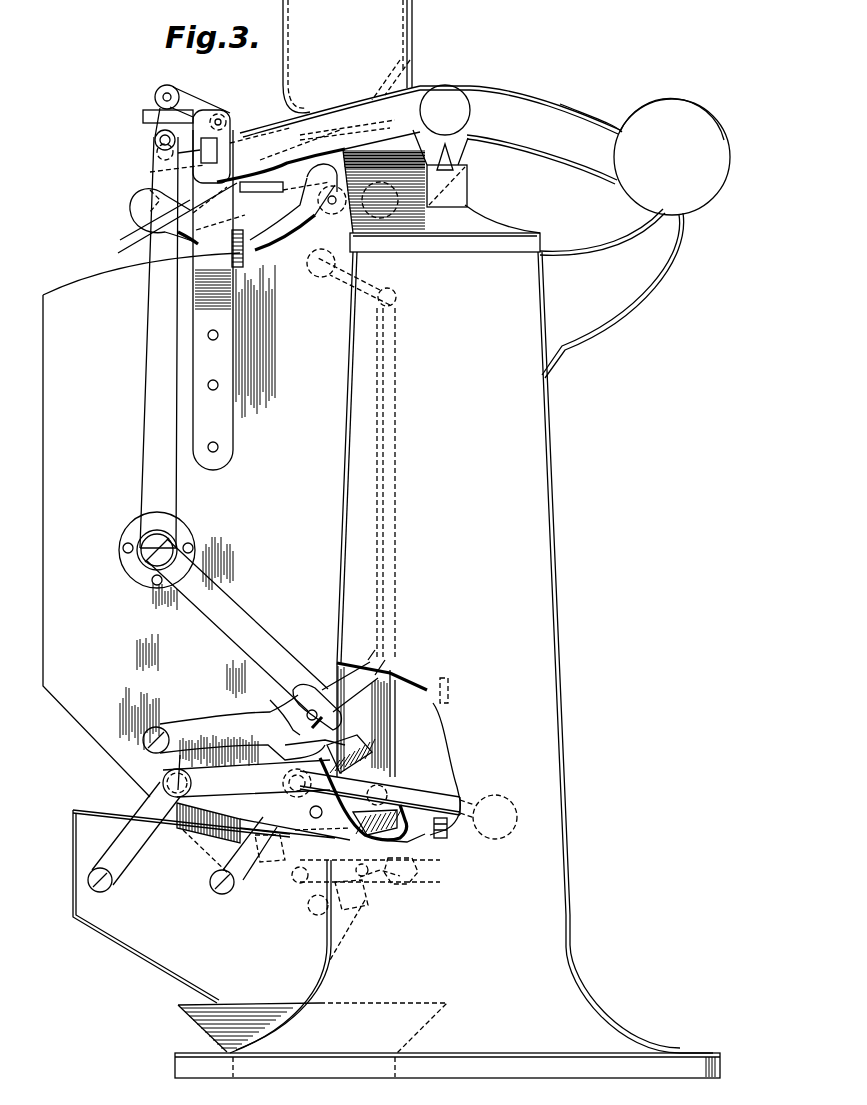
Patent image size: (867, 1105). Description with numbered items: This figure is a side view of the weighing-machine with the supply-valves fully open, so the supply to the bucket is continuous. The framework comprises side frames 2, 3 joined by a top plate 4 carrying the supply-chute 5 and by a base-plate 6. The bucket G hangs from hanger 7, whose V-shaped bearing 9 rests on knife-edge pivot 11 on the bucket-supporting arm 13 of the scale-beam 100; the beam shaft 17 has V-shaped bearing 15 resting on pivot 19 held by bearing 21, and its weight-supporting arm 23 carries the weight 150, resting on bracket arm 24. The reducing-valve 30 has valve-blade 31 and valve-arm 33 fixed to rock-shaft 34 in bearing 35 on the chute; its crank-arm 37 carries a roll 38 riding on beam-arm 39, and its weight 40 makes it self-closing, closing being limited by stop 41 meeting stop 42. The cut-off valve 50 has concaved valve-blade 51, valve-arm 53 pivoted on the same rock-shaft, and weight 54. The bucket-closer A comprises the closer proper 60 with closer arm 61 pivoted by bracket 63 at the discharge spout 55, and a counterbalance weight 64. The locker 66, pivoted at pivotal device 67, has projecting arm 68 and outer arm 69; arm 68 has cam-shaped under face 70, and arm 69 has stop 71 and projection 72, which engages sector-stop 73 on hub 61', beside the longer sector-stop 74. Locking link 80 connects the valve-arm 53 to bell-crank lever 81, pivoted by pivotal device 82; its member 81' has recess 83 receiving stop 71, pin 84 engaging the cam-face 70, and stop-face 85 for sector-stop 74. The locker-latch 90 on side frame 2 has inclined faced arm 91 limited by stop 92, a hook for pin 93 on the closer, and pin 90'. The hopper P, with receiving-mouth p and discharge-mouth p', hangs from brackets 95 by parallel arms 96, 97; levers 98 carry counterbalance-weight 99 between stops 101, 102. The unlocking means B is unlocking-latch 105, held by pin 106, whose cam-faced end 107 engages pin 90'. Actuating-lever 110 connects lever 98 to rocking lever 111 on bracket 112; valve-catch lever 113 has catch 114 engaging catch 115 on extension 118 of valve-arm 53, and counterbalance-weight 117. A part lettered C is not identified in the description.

The side frame 2 is at (440, 732).
The side frame 3 is at (545, 582).
The top plate 4 is at (490, 228).
The supply-chute 5 is at (414, 24).
The base-plate 6 is at (470, 1060).
The hanger 7 is at (200, 272).
The V-shaped bearing 9 is at (155, 138).
The pivot 11 is at (157, 151).
The bucket-supporting arm 13 is at (312, 125).
The V-shaped bearing 15 is at (478, 136).
The shaft 17 is at (440, 88).
The pivot 19 is at (456, 160).
The bearing 21 is at (469, 183).
The weight-supporting arm 23 is at (560, 115).
The bracket arm 24 is at (613, 305).
The reducing-valve 30 is at (140, 218).
The valve-blade 31 is at (143, 224).
The valve-arm 33 is at (140, 196).
The rock-shaft 34 is at (220, 113).
The bearing 35 is at (236, 122).
The crank-arm 37 is at (190, 97).
The roll 38 is at (155, 93).
The beam-arm 39 is at (142, 117).
The weight 40 is at (130, 210).
The stop 41 is at (178, 153).
The stop 42 is at (180, 163).
The cut-off valve 50 is at (270, 248).
The concaved valve-blade 51 is at (310, 250).
The valve-arm 53 is at (300, 125).
The weight 54 is at (345, 152).
The discharge spout 55 is at (215, 880).
The closer proper 60 is at (213, 860).
The closer arm 61 is at (294, 811).
The hub 61' is at (360, 840).
The bracket 63 is at (395, 785).
The weight 64 is at (418, 843).
The locker 66 is at (185, 718).
The pivotal device 67 is at (152, 752).
The projecting arm 68 is at (302, 695).
The outer arm 69 is at (290, 718).
The cam-shaped under face 70 is at (382, 665).
The stop 71 is at (340, 735).
The projection 72 is at (283, 783).
The sector-stop 73 is at (285, 742).
The sector-stop 74 is at (400, 776).
The locking link 80 is at (163, 90).
The bell-crank lever 81 is at (146, 342).
The member 81' is at (232, 624).
The pivotal device 82 is at (150, 553).
The recess 83 is at (340, 705).
The pin 84 is at (370, 662).
The stop-face 85 is at (372, 745).
The locker-latch 90 is at (386, 884).
The pin 90' is at (372, 857).
The inclined faced arm 91 is at (418, 882).
The stop 92 is at (420, 870).
The pin 93 is at (225, 815).
The bracket 95 is at (200, 755).
The parallel arm 96 is at (125, 862).
The parallel arm 97 is at (240, 878).
The lever 98 is at (450, 798).
The counterbalance-weight 99 is at (500, 797).
The scale-beam 100 is at (470, 95).
The stop 101 is at (450, 830).
The stop 102 is at (449, 690).
The unlocking-latch 105 is at (365, 905).
The pin 106 is at (310, 910).
The cam-faced end 107 is at (298, 884).
The actuating-lever 110 is at (396, 470).
The rocking lever 111 is at (376, 280).
The bracket 112 is at (378, 292).
The valve-catch lever 113 is at (232, 245).
The catch 114 is at (219, 208).
The catch 115 is at (261, 186).
The counterbalance-weight 117 is at (392, 208).
The extension 118 is at (152, 258).
The weight 150 is at (640, 197).
The bucket-closer A is at (270, 852).
The unlocking means B is at (351, 895).
The pivot C is at (175, 526).
The load receiver G is at (43, 556).
The hopper P is at (132, 906).
The receiving-mouth p is at (162, 820).
The discharge-mouth p' is at (312, 1007).